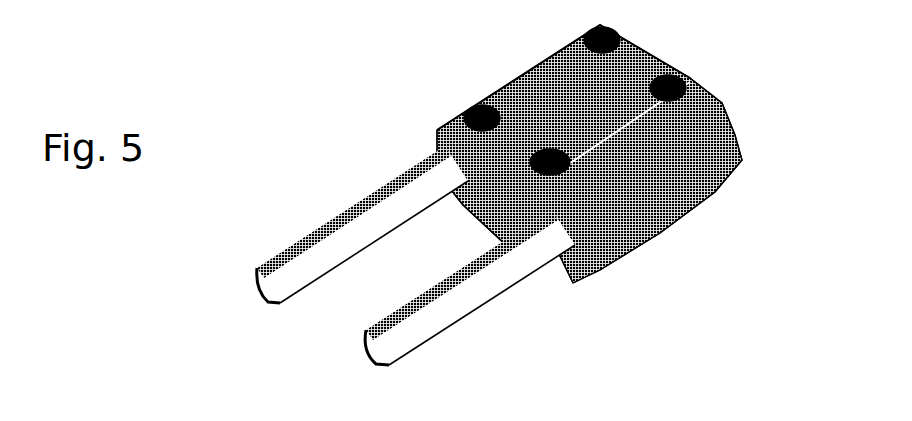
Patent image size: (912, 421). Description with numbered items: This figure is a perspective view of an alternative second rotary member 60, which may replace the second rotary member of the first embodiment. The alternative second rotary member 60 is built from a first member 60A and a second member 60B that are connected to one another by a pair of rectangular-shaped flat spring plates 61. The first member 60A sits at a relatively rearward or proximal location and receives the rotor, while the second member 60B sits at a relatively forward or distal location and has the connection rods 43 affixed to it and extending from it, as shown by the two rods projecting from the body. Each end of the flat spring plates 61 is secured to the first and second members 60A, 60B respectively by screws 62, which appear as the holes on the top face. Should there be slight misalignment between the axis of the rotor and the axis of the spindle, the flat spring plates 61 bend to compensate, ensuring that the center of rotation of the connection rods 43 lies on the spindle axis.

The alternative second rotary member 60 is at (378, 140).
The first member 60A is at (737, 167).
The second member 60B is at (623, 253).
The flat spring plates 61 is at (528, 68).
The screws 62 is at (470, 108).
The connection rods 43 is at (380, 332).